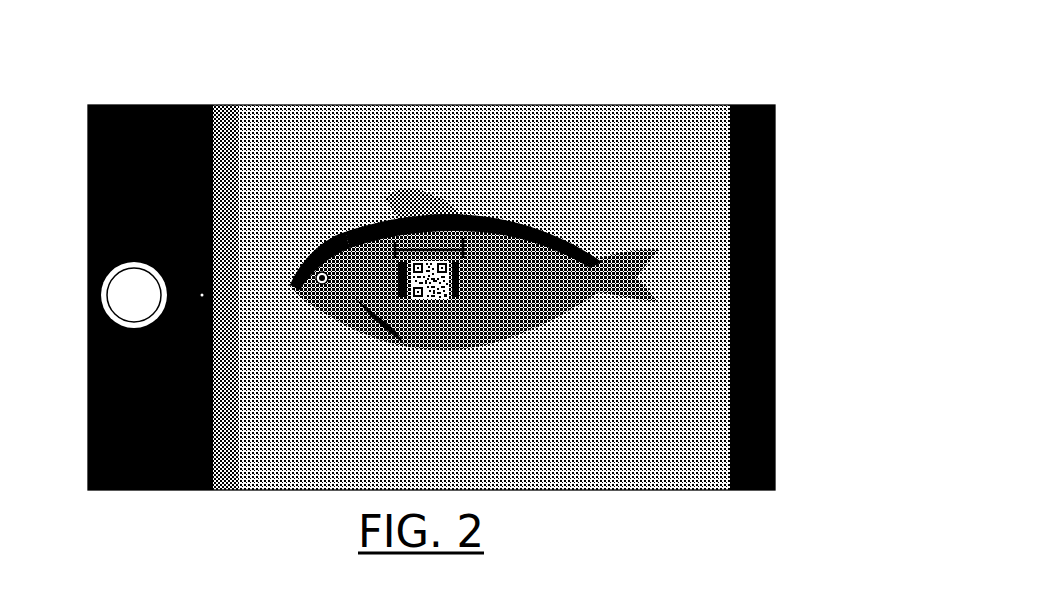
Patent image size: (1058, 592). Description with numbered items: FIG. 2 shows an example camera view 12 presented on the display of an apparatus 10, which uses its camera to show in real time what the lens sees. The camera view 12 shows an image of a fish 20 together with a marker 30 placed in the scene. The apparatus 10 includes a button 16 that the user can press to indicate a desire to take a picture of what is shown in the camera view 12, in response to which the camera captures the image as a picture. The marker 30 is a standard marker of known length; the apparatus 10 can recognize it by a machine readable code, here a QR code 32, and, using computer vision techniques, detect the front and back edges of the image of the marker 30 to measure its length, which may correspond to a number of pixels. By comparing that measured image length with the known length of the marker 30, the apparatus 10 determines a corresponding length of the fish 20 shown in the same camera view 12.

The apparatus 10 is at (665, 85).
The camera view 12 is at (252, 132).
The button 16 is at (127, 292).
The fish 20 is at (563, 265).
The marker 30 is at (399, 298).
The QR code 32 is at (445, 300).